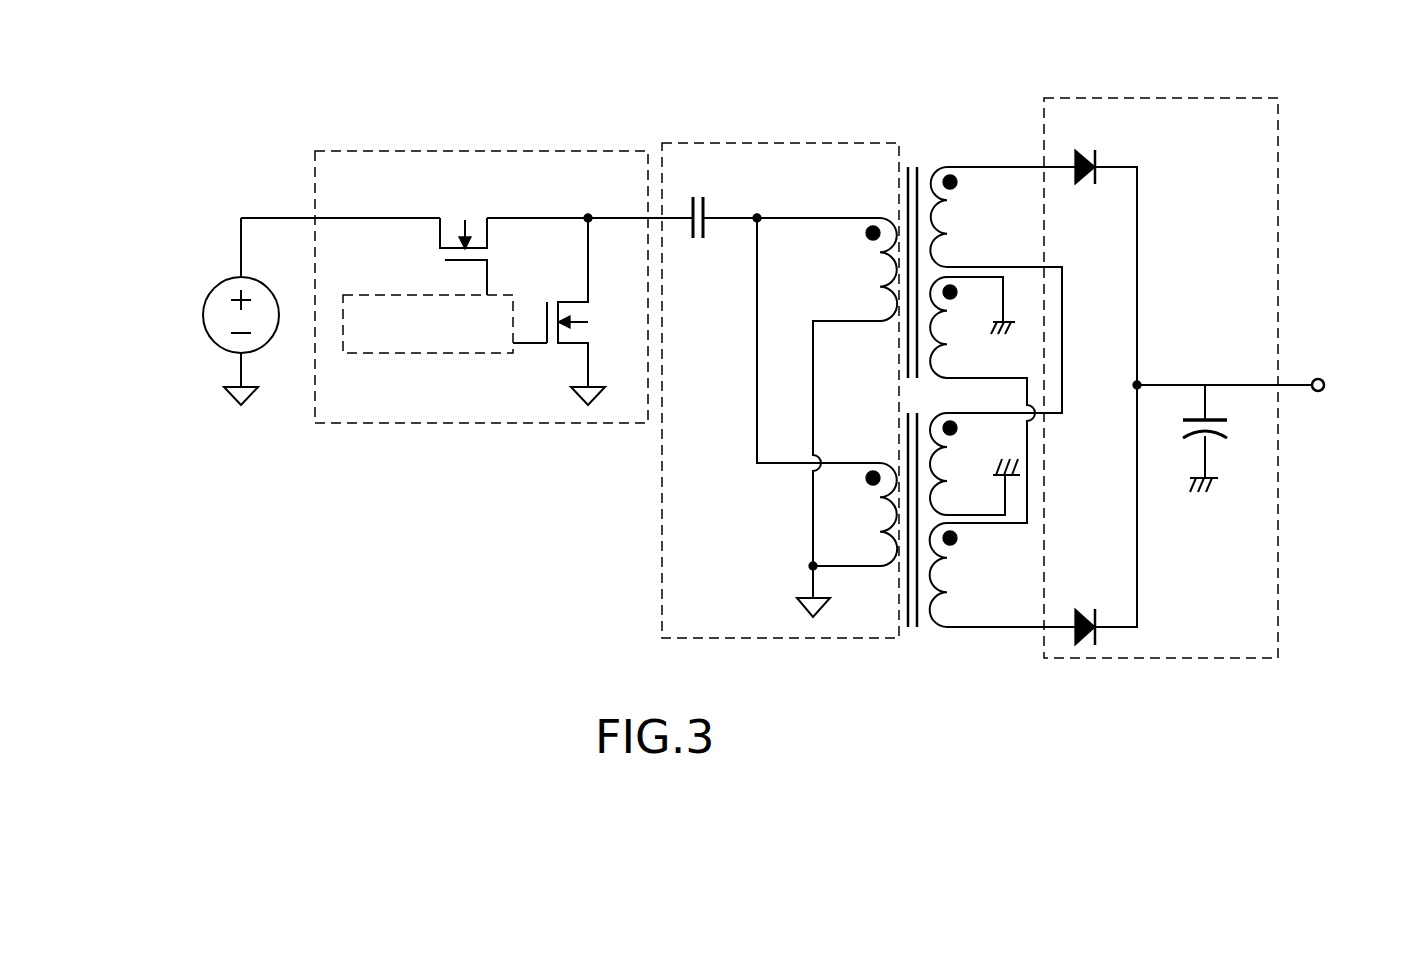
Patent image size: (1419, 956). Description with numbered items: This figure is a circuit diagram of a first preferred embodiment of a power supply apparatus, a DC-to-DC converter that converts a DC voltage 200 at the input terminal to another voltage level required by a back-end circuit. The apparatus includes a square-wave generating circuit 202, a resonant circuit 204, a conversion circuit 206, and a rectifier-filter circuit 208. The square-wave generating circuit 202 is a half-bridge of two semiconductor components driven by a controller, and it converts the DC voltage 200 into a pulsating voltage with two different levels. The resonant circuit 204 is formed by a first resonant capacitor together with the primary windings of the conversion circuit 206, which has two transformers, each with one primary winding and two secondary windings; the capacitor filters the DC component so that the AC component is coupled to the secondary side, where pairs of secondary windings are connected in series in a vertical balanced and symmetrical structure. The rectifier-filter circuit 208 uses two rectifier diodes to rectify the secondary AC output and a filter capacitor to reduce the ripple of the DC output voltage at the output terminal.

The DC voltage 200 is at (218, 314).
The square-wave generating circuit 202 is at (447, 150).
The resonant circuit 204 is at (752, 143).
The conversion circuit 206 is at (945, 130).
The rectifier-filter circuit 208 is at (1160, 97).